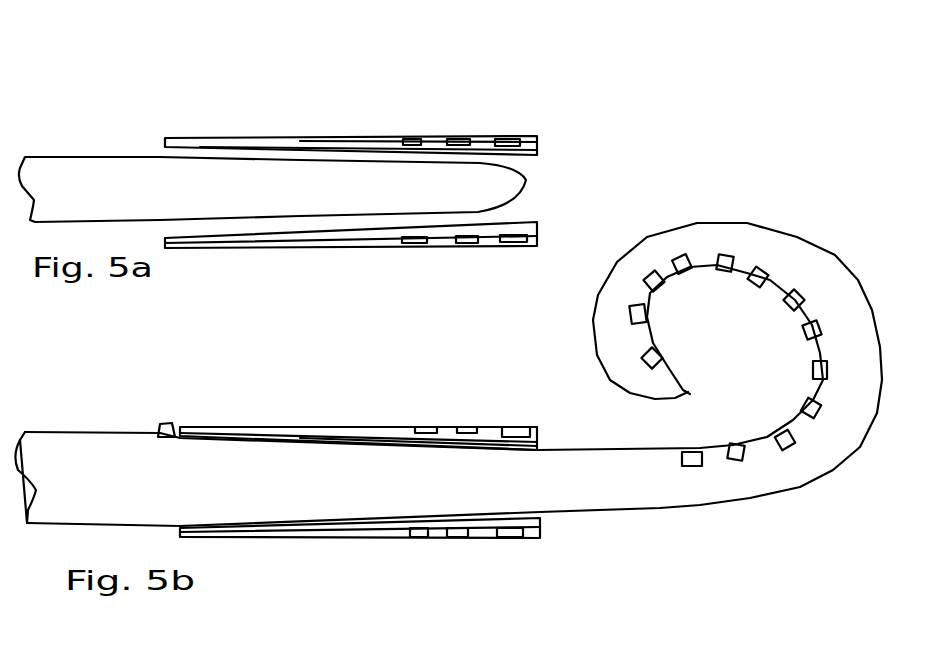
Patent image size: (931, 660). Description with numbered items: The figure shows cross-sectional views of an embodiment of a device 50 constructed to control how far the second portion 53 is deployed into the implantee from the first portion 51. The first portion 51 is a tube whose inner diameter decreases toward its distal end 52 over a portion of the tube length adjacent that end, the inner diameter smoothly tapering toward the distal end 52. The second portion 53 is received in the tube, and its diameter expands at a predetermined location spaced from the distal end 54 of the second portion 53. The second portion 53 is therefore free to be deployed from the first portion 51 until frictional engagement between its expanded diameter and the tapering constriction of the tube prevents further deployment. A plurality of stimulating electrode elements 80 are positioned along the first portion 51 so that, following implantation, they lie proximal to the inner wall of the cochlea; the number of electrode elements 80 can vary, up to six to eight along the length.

In FIG. 5A, the device 50 is at (407, 92).
In FIG. 5B, the device 50 is at (418, 568).
In FIG. 5A, the first portion 51 is at (527, 130).
In FIG. 5B, the first portion 51 is at (473, 427).
In FIG. 5A, the distal end of the first portion 52 is at (538, 148).
In FIG. 5B, the distal end of the first portion 52 is at (543, 435).
In FIG. 5A, the second portion 53 is at (200, 205).
In FIG. 5B, the second portion 53 is at (627, 510).
In FIG. 5A, the distal end of the second portion 54 is at (528, 192).
In FIG. 5B, the distal end of the second portion 54 is at (690, 394).
In FIG. 5A, the stimulating electrode elements 80 is at (458, 136).
In FIG. 5B, the stimulating electrode elements 80 is at (460, 538).